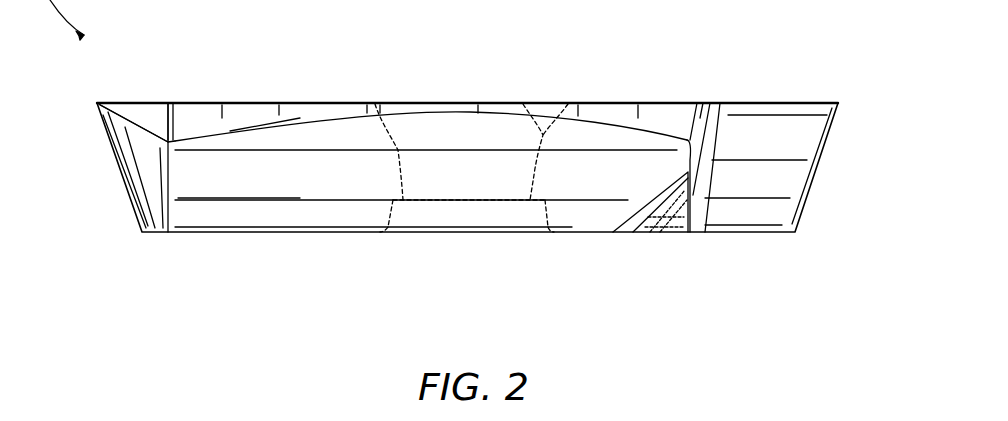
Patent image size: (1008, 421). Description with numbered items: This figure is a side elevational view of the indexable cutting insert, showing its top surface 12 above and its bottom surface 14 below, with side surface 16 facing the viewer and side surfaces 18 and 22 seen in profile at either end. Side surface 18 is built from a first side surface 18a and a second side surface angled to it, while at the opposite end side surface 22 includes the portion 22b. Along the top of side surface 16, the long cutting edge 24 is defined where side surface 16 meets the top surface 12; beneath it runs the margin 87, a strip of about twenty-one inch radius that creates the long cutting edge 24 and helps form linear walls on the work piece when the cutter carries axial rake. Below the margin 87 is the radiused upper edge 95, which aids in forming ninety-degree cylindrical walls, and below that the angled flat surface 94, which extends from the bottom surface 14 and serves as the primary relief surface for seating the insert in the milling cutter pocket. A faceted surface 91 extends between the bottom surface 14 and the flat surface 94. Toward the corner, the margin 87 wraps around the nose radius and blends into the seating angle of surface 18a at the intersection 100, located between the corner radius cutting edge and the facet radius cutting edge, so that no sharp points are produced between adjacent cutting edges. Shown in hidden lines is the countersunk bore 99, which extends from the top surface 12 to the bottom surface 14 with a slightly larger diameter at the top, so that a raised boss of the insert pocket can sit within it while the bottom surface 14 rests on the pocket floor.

The top surface 12 is at (300, 102).
The bottom surface 14 is at (337, 237).
The side surface 16 is at (577, 212).
The side surface 18 is at (837, 153).
The first side surface 18a is at (760, 180).
The side surface 22 is at (102, 170).
The end panel side portion 22b is at (140, 194).
The long cutting edge 24 is at (651, 103).
The margin 87 is at (200, 117).
The faceted surface 91 is at (670, 205).
The angled flat surface 94 is at (236, 190).
The radiused upper edge 95 is at (262, 131).
The countersunk bore 99 is at (523, 103).
The intersection 100 is at (127, 117).